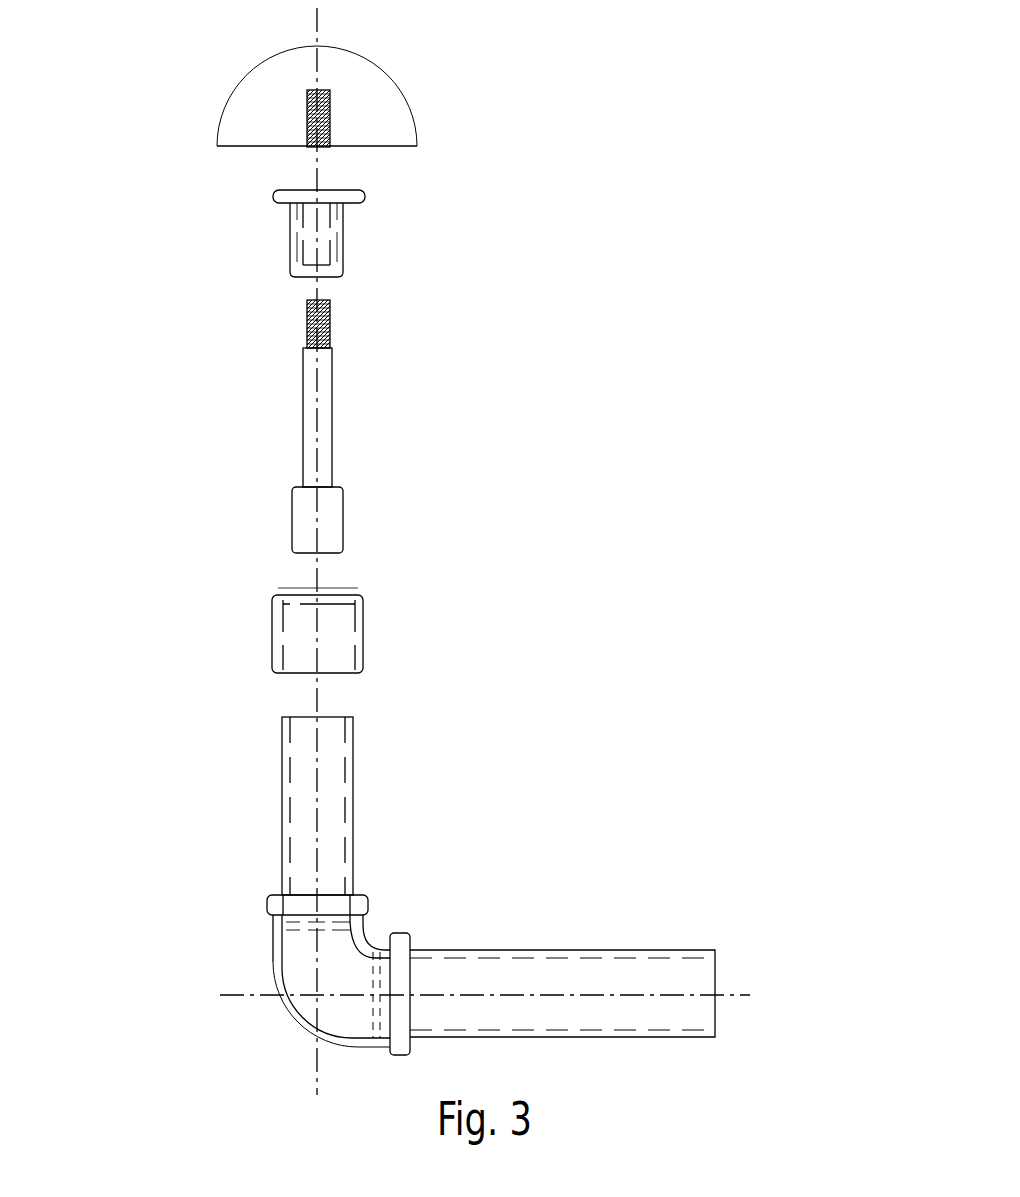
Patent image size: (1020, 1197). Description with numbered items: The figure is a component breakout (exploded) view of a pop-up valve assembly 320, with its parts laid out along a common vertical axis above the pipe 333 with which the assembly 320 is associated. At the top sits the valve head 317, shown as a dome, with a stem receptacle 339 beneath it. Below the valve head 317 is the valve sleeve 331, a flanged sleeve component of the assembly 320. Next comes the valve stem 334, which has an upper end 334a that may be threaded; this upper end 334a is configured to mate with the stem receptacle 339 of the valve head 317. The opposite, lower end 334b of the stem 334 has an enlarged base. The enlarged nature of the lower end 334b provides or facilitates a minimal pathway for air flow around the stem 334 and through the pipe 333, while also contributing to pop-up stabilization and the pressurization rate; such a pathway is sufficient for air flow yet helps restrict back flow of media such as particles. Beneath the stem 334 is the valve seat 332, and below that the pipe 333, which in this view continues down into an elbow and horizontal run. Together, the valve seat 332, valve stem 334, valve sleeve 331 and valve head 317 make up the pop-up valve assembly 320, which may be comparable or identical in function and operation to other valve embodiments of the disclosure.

The valve head 317 is at (397, 82).
The stem receptacle 339 is at (330, 140).
The valve sleeve 331 is at (345, 249).
The upper end 334a is at (305, 320).
The valve stem 334 is at (332, 420).
The lower end 334b is at (290, 520).
The valve seat 332 is at (365, 597).
The pipe 333 is at (355, 807).
The pop-up valve assembly 320 is at (182, 838).